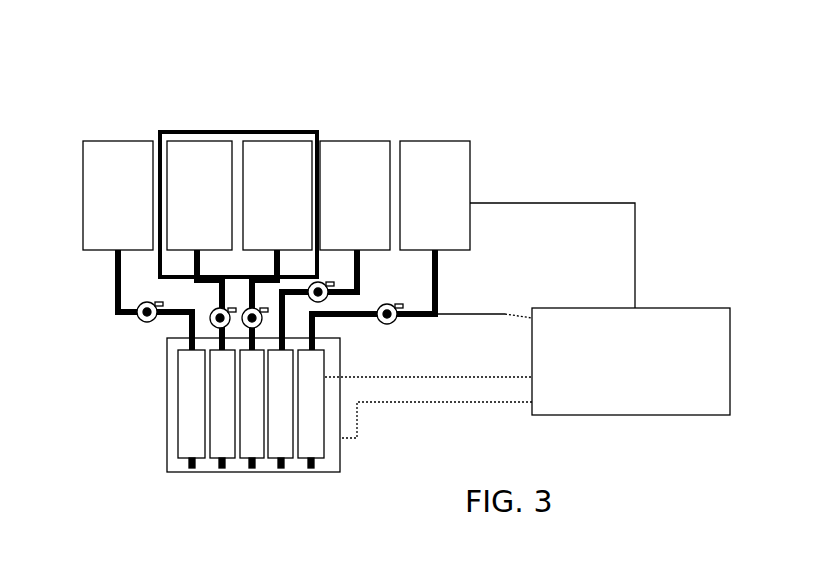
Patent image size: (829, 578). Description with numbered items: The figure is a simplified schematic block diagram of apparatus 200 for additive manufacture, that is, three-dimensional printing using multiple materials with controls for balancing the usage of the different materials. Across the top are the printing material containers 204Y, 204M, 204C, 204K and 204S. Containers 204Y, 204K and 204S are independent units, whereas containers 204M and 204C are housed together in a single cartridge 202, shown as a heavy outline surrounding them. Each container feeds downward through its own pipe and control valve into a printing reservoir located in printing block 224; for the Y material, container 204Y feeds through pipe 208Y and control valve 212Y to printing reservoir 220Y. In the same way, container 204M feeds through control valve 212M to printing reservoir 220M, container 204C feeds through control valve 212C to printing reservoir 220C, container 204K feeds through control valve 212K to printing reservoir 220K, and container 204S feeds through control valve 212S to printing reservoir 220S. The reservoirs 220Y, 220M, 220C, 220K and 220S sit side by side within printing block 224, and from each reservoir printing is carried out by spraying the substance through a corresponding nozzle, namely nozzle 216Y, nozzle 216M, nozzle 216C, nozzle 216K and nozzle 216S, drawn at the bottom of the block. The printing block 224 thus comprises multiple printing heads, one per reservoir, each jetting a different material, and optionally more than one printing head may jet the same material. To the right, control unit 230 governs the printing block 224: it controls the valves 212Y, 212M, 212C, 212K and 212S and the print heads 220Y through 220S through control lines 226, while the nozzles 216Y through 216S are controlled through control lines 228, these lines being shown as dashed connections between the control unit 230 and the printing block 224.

The apparatus for additive manufacture 200 is at (516, 173).
The single cartridge 202 is at (238, 130).
The printing material container 204Y is at (118, 138).
The printing material container 204M is at (207, 183).
The printing material container 204C is at (292, 168).
The printing material container 204K is at (362, 168).
The printing material container 204S is at (457, 168).
The pipe 208Y is at (115, 266).
The control valve 212Y is at (138, 320).
The control valve 212M is at (262, 312).
The control valve 212C is at (226, 330).
The control valve 212K is at (322, 298).
The control valve 212S is at (390, 318).
The printing reservoir 220Y is at (178, 405).
The printing reservoir 220M is at (220, 428).
The printing reservoir 220C is at (255, 430).
The printing reservoir 220K is at (285, 410).
The printing reservoir 220S is at (325, 382).
The nozzle 216Y is at (190, 478).
The nozzle 216M is at (222, 472).
The nozzle 216C is at (257, 477).
The nozzle 216K is at (290, 472).
The nozzle 216S is at (317, 465).
The printing block 224 is at (167, 422).
The control lines 226 is at (373, 382).
The control lines 228 is at (388, 407).
The control unit 230 is at (600, 309).